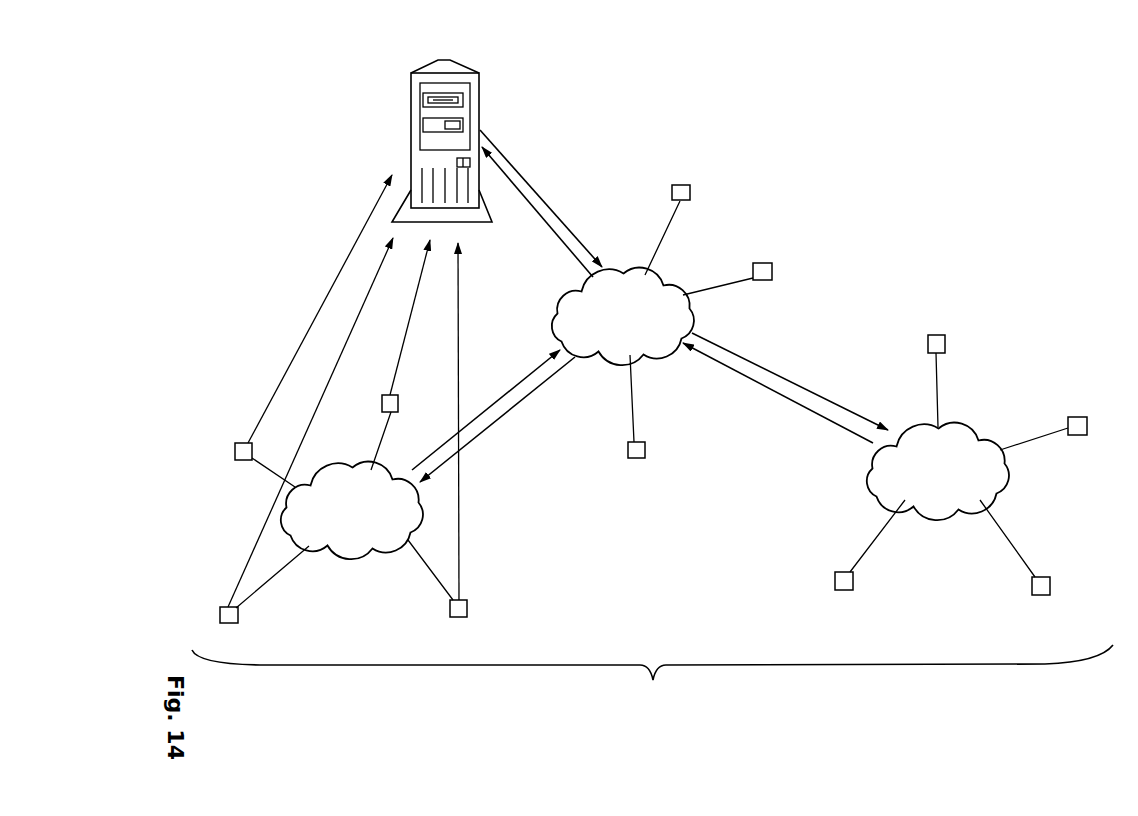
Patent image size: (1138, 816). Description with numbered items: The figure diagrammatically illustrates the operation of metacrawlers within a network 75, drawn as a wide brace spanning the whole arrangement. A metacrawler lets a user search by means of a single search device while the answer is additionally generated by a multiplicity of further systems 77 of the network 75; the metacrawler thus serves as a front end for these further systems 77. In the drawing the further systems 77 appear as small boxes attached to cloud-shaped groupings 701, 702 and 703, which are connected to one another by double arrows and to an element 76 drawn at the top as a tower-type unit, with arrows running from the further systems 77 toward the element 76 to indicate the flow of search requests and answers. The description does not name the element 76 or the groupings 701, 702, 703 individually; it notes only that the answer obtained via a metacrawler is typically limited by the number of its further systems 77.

The server 76 is at (452, 61).
The further systems 77 is at (252, 452).
The network 75 is at (653, 680).
The first sub-network 701 is at (369, 522).
The second sub-network 702 is at (955, 487).
The third sub-network 703 is at (638, 327).